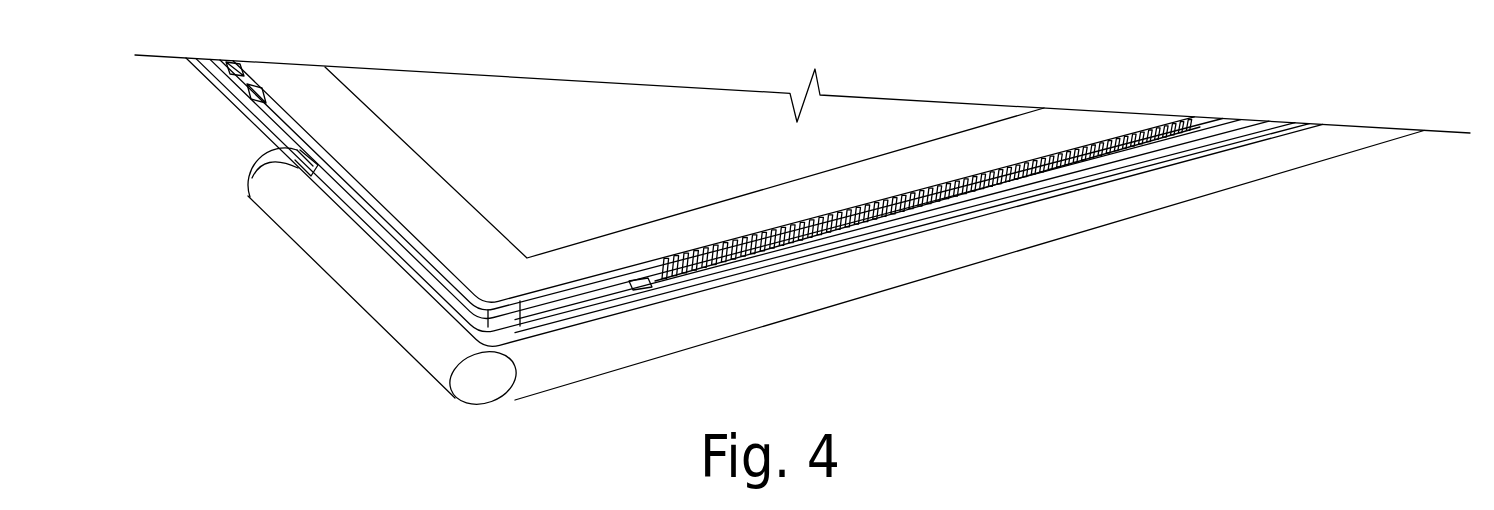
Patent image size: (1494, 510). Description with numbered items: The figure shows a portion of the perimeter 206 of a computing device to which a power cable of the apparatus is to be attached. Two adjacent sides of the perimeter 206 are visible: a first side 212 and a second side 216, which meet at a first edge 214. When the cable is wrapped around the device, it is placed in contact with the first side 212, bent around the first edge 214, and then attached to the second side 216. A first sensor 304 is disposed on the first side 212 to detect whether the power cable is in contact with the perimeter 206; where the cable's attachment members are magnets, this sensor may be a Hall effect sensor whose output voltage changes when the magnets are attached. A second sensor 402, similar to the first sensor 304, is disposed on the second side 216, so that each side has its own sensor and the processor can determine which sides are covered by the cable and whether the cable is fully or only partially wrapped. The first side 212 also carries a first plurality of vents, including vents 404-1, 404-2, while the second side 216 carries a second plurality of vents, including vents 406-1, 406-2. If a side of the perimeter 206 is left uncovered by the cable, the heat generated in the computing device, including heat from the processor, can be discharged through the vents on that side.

The perimeter 206 is at (555, 302).
The first side 212 is at (383, 240).
The first edge 214 is at (497, 333).
The second side 216 is at (1113, 153).
The first sensor 304 is at (262, 102).
The second sensor 402 is at (643, 286).
The vent 404-1 is at (250, 90).
The vent 404-2 is at (236, 70).
The vent 406-1 is at (665, 280).
The vent 406-2 is at (679, 277).